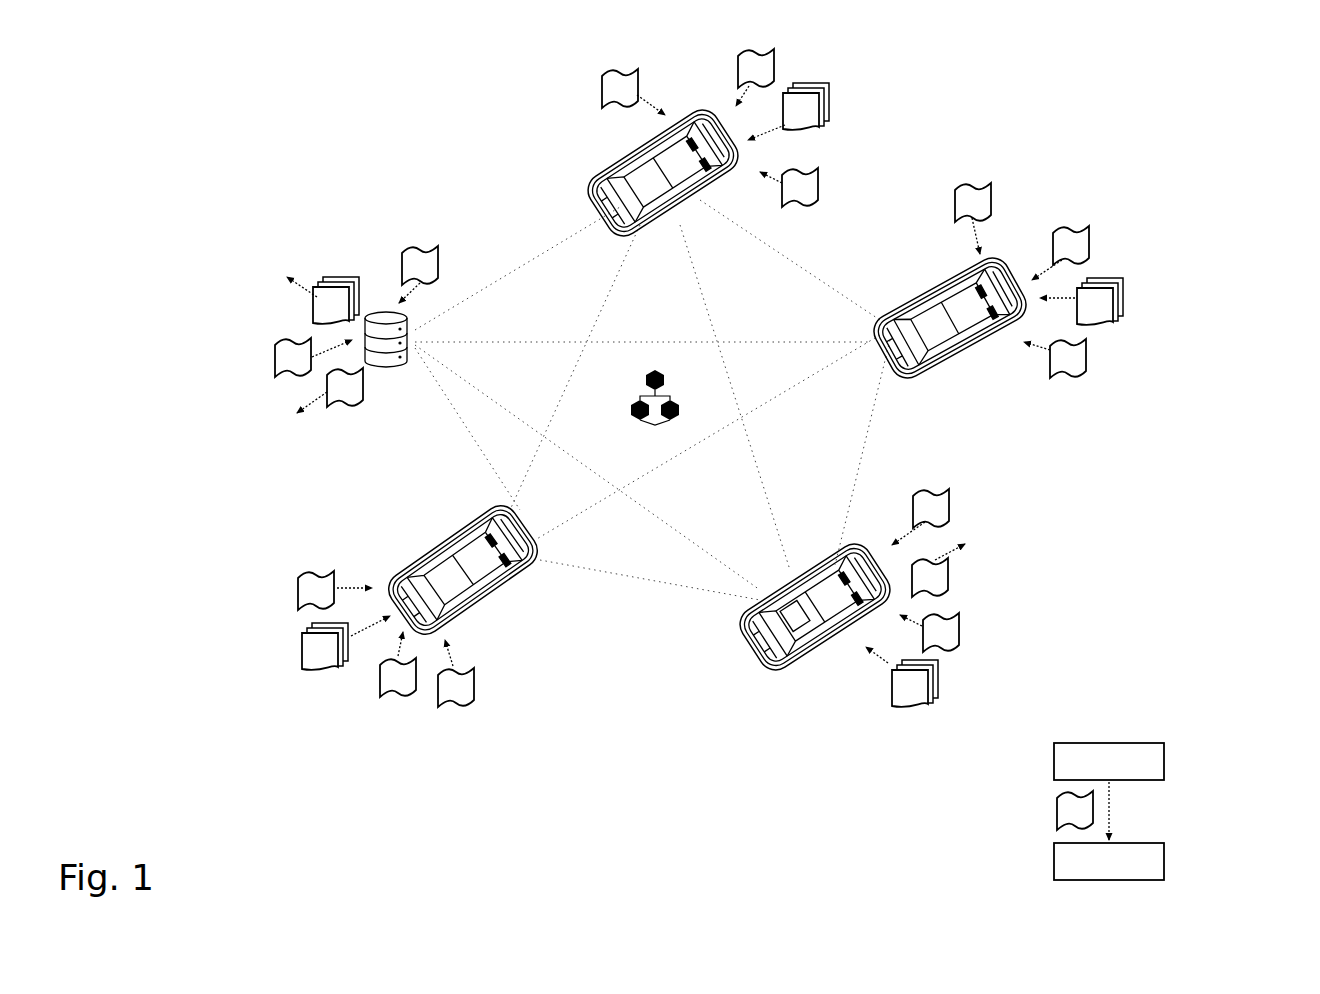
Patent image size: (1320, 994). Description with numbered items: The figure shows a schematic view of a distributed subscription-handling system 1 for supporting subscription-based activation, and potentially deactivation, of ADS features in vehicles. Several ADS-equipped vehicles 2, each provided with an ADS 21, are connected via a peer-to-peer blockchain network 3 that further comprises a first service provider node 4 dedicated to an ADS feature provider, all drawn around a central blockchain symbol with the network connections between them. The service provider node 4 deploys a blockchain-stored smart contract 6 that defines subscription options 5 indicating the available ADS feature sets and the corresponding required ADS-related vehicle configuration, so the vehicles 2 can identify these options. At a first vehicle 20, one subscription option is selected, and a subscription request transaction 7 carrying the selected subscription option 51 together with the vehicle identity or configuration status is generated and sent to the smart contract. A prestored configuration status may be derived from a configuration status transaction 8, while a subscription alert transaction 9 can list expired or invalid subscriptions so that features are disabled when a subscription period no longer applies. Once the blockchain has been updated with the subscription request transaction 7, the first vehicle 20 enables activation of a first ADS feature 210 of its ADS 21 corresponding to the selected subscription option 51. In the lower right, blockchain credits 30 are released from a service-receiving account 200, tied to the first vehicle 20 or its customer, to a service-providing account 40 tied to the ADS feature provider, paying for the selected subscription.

The distributed subscription-handling system 1 is at (597, 549).
The ADS-equipped vehicle 2 is at (612, 142).
The first vehicle 20 is at (720, 659).
The ADS 21 is at (803, 663).
The first ADS feature 210 is at (800, 624).
The peer-to-peer blockchain network 3 is at (578, 318).
The first service provider node 4 is at (383, 379).
The subscription options 5 is at (338, 262).
The blockchain-stored smart contract 6 is at (722, 427).
The subscription request transaction 7 is at (262, 363).
The selected subscription option 51 is at (960, 580).
The configuration status transaction 8 is at (423, 240).
The subscription alert transaction 9 is at (358, 418).
The blockchain credits 30 is at (1045, 798).
The service-providing account 40 is at (1178, 862).
The service-receiving account 200 is at (1185, 762).